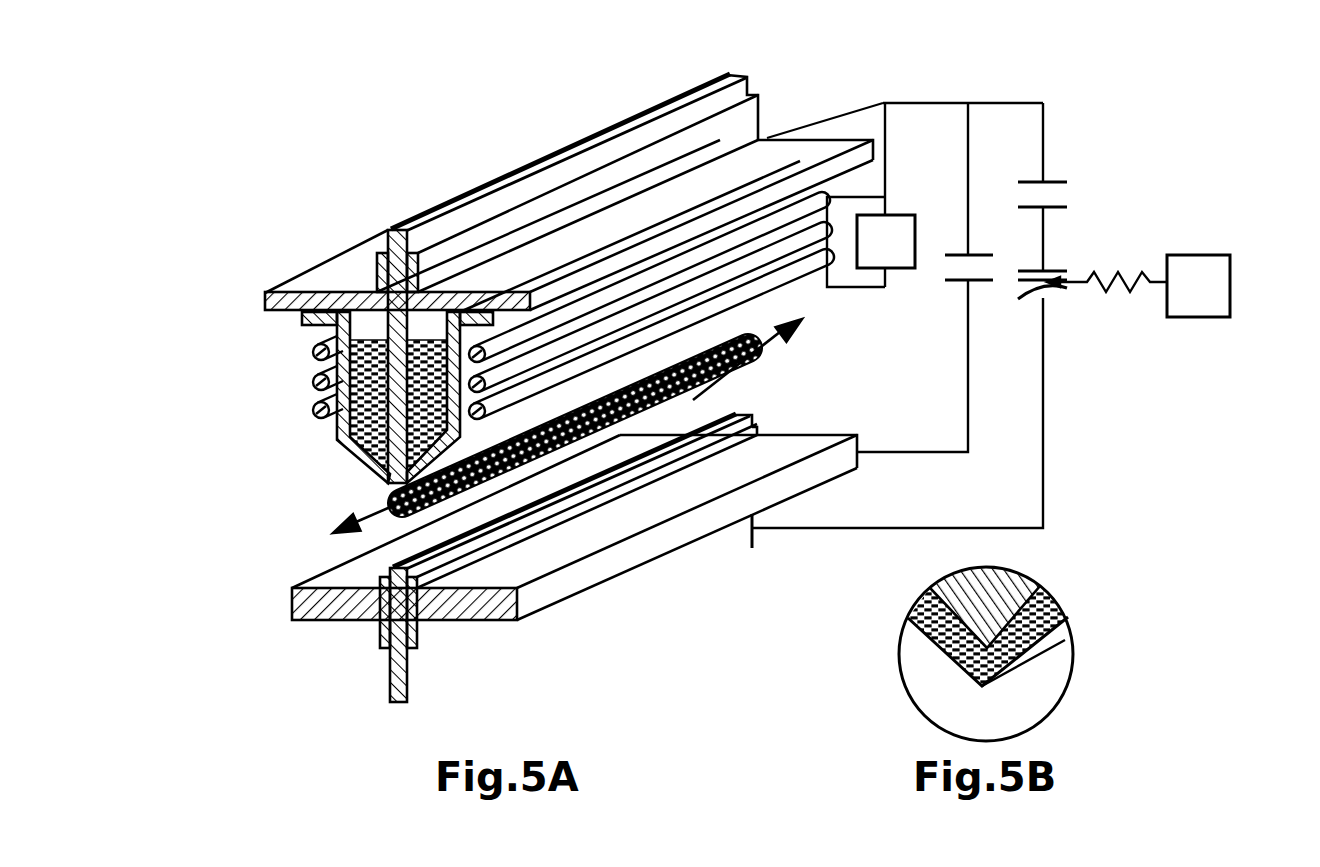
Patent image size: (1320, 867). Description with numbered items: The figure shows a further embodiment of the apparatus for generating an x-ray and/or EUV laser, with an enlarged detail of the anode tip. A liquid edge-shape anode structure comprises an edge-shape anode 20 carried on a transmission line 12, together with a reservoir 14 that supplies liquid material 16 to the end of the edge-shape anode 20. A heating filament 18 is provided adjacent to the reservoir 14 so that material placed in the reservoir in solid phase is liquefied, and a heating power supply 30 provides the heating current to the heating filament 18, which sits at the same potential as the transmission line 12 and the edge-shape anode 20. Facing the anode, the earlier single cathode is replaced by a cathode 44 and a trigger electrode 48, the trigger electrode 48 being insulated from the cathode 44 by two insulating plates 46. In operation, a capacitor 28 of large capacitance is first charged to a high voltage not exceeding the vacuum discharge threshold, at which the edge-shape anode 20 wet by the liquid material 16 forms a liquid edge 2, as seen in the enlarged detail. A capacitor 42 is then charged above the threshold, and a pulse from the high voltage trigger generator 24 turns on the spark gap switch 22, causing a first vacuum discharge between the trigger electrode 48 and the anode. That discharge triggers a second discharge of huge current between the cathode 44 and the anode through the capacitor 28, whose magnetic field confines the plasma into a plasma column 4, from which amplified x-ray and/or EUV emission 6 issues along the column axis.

In FIG. 5B, the liquid edge 2 is at (963, 670).
In FIG. 5A, the plasma column 4 is at (397, 493).
In FIG. 5A, the x-ray and/or EUV 6 is at (777, 333).
In FIG. 5A, the transmission line 12 is at (265, 303).
In FIG. 5A, the reservoir 14 is at (337, 330).
In FIG. 5A, the liquid material 16 is at (320, 371).
In FIG. 5A, the heating filament 18 is at (312, 412).
In FIG. 5A, the edge-shape anode 20 is at (353, 453).
In FIG. 5B, the edge-shape anode 20 is at (1053, 600).
In FIG. 5A, the spark gap switch 22 is at (1053, 293).
In FIG. 5A, the high voltage trigger generator 24 is at (1138, 286).
In FIG. 5A, the capacitor 28 is at (972, 262).
In FIG. 5A, the heating power supply 30 is at (935, 195).
In FIG. 5A, the capacitor 42 is at (1043, 192).
In FIG. 5A, the cathode 44 is at (290, 600).
In FIG. 5A, the insulating plates 46 is at (380, 633).
In FIG. 5A, the trigger electrode 48 is at (390, 682).